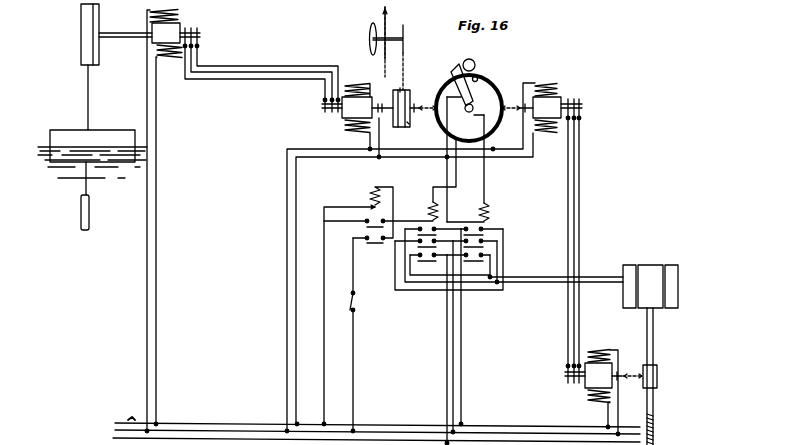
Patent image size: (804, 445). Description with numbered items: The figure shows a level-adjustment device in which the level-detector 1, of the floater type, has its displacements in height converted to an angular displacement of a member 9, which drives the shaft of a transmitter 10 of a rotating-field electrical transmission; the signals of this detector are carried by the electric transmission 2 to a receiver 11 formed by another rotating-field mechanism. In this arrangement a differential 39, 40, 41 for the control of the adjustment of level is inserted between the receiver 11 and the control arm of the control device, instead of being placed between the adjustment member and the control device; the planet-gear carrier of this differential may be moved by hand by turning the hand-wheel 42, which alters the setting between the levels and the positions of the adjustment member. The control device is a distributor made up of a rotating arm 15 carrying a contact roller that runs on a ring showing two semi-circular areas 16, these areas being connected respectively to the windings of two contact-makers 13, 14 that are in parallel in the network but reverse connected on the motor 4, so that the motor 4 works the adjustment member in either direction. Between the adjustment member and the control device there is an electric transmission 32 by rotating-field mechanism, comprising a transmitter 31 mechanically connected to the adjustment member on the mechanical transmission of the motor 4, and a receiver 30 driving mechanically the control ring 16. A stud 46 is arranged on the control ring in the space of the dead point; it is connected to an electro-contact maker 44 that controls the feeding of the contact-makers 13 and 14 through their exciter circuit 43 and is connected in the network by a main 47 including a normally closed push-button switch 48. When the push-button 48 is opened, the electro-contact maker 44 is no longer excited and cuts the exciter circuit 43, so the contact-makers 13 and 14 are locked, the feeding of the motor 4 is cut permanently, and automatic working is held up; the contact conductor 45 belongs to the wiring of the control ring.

The level-detector 1 is at (84, 45).
The electric transmission 2 is at (236, 80).
The motor 4 is at (651, 265).
The member 9 is at (120, 32).
The transmitter 10 is at (172, 33).
The receiver 11 is at (352, 113).
The contact-maker 13 is at (422, 210).
The contact-maker 14 is at (488, 213).
The rotating arm 15 is at (466, 60).
The semi-circular areas 16 is at (503, 93).
The receiver 30 is at (551, 104).
The transmitter 31 is at (596, 388).
The electric transmission 32 is at (581, 188).
The differential 39 is at (405, 90).
The differential 40 is at (395, 89).
The differential 41 is at (409, 120).
The hand-wheel 42 is at (369, 39).
The exciter circuit 43 is at (338, 226).
The electro-contact maker 44 is at (372, 194).
The contact conductor 45 is at (446, 172).
The stud 46 is at (479, 77).
The main 47 is at (354, 276).
The push-button switch 48 is at (356, 302).